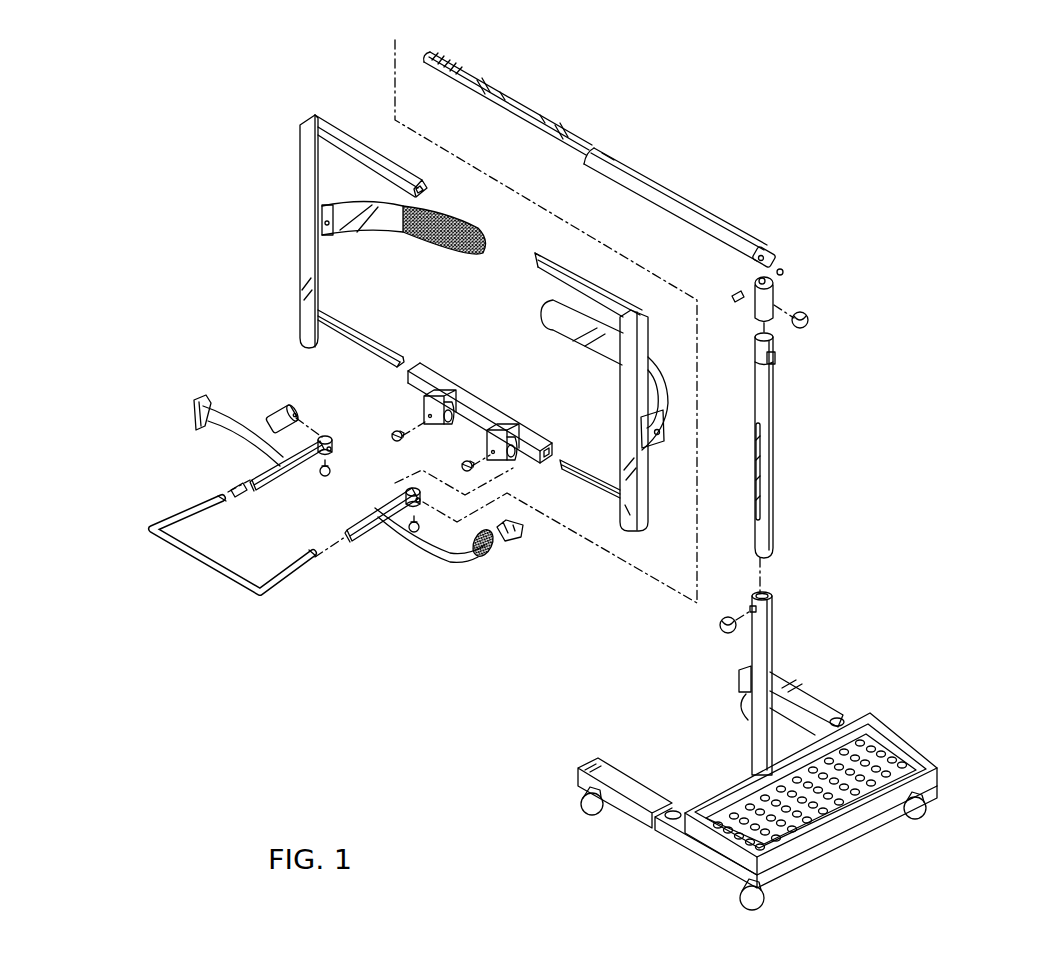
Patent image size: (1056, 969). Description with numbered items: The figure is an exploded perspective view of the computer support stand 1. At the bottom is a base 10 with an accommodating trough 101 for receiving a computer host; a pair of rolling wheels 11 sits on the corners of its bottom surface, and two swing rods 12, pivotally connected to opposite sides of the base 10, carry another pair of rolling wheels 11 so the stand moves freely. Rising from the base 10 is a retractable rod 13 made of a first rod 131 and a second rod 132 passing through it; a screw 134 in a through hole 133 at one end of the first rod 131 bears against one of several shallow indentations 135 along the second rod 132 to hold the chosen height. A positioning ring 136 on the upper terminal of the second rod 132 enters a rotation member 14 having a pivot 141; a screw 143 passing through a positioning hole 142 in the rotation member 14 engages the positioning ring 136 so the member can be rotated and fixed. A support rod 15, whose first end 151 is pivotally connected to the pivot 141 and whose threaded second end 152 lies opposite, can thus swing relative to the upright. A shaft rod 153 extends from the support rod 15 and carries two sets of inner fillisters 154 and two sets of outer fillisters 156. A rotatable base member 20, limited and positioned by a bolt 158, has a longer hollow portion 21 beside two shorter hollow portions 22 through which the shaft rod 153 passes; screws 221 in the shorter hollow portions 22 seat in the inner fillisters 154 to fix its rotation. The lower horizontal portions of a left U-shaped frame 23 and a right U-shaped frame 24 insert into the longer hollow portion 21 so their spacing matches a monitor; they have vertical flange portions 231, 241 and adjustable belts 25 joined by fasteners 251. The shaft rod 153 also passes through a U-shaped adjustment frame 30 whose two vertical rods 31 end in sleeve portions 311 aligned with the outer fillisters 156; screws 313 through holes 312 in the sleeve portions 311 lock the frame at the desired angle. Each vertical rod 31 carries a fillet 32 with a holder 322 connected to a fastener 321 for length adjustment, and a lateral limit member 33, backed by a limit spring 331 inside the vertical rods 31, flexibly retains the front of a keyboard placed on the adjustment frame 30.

The rehabilitation standing frame device 1 is at (946, 528).
The base 10 is at (690, 840).
The tray / perforated platform 101 is at (897, 740).
The rolling wheels 11 is at (581, 804).
The swing rods 12 is at (622, 783).
The retractable rod 13 is at (780, 612).
The first rod 131 is at (765, 650).
The second rod 132 is at (768, 398).
The through hole 133 is at (752, 609).
The screw 134 is at (720, 628).
The shallow indentations 135 is at (756, 450).
The positioning ring 136 is at (773, 360).
The rotation member 14 is at (812, 310).
The pivot 141 is at (757, 284).
The positioning hole 142 is at (775, 300).
The screw 143 is at (810, 322).
The support rod 15 is at (687, 195).
The first end 151 is at (768, 250).
The second end 152 is at (450, 68).
The shaft rod 153 is at (588, 148).
The inner fillisters 154 is at (485, 92).
The outer fillisters 156 is at (470, 88).
The bolt 158 is at (283, 408).
The rotatable base member 20 is at (480, 392).
The longer hollow portion 21 is at (525, 430).
The shorter hollow portions 22 is at (447, 395).
The screws 221 is at (462, 466).
The left U-shaped frame 23 is at (303, 116).
The vertical flange portion 231 is at (308, 238).
The right U-shaped frame 24 is at (649, 505).
The vertical flange portion 241 is at (625, 510).
The adjustable belts 25 is at (543, 303).
The fasteners 251 is at (442, 240).
The adjustment frame 30 is at (318, 580).
The vertical rods 31 is at (250, 475).
The sleeve portion 311 is at (322, 437).
The holes 312 is at (335, 452).
The screws 313 is at (324, 478).
The fillet 32 is at (238, 440).
The fastener 321 is at (480, 556).
The holder 322 is at (199, 400).
The lateral limit member 33 is at (213, 565).
The limit spring 331 is at (230, 487).